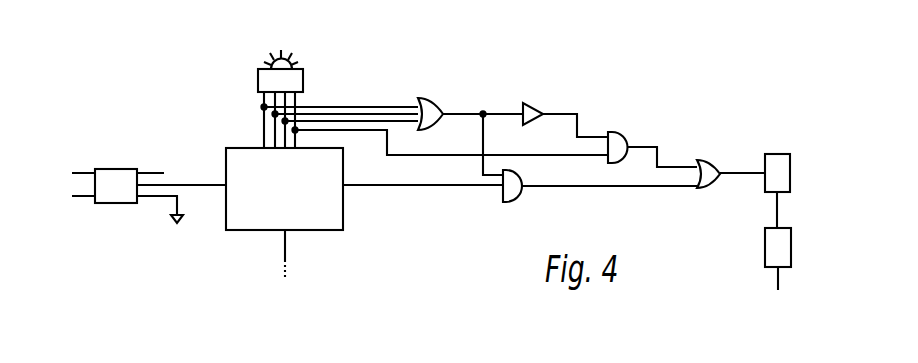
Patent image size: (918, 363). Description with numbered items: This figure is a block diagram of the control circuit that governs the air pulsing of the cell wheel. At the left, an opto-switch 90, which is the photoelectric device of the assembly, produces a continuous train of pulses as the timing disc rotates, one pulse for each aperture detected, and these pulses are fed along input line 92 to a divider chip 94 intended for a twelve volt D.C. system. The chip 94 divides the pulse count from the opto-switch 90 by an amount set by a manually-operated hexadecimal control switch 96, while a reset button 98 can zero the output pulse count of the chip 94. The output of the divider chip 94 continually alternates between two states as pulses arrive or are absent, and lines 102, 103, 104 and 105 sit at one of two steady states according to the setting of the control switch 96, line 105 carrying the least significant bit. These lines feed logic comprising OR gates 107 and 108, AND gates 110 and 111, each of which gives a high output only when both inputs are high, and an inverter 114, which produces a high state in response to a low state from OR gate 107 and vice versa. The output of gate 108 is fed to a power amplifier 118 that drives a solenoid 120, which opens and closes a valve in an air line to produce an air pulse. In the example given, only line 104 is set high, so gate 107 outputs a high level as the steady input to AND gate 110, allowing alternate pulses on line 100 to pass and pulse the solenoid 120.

The opto-switch 90 is at (117, 168).
The input line 92 is at (188, 183).
The divider chip 94 is at (318, 219).
The hexadecimal control switch 96 is at (257, 80).
The reset button 98 is at (280, 246).
The pulse line 100 is at (390, 185).
The line 102 is at (316, 105).
The line 103 is at (342, 113).
The line 104 is at (382, 120).
The line 105 is at (507, 153).
The OR gate 107 is at (431, 97).
The OR gate 108 is at (703, 158).
The AND gate 110 is at (517, 195).
The AND gate 111 is at (623, 131).
The inverter 114 is at (537, 102).
The power amplifier 118 is at (777, 153).
The solenoid 120 is at (765, 235).